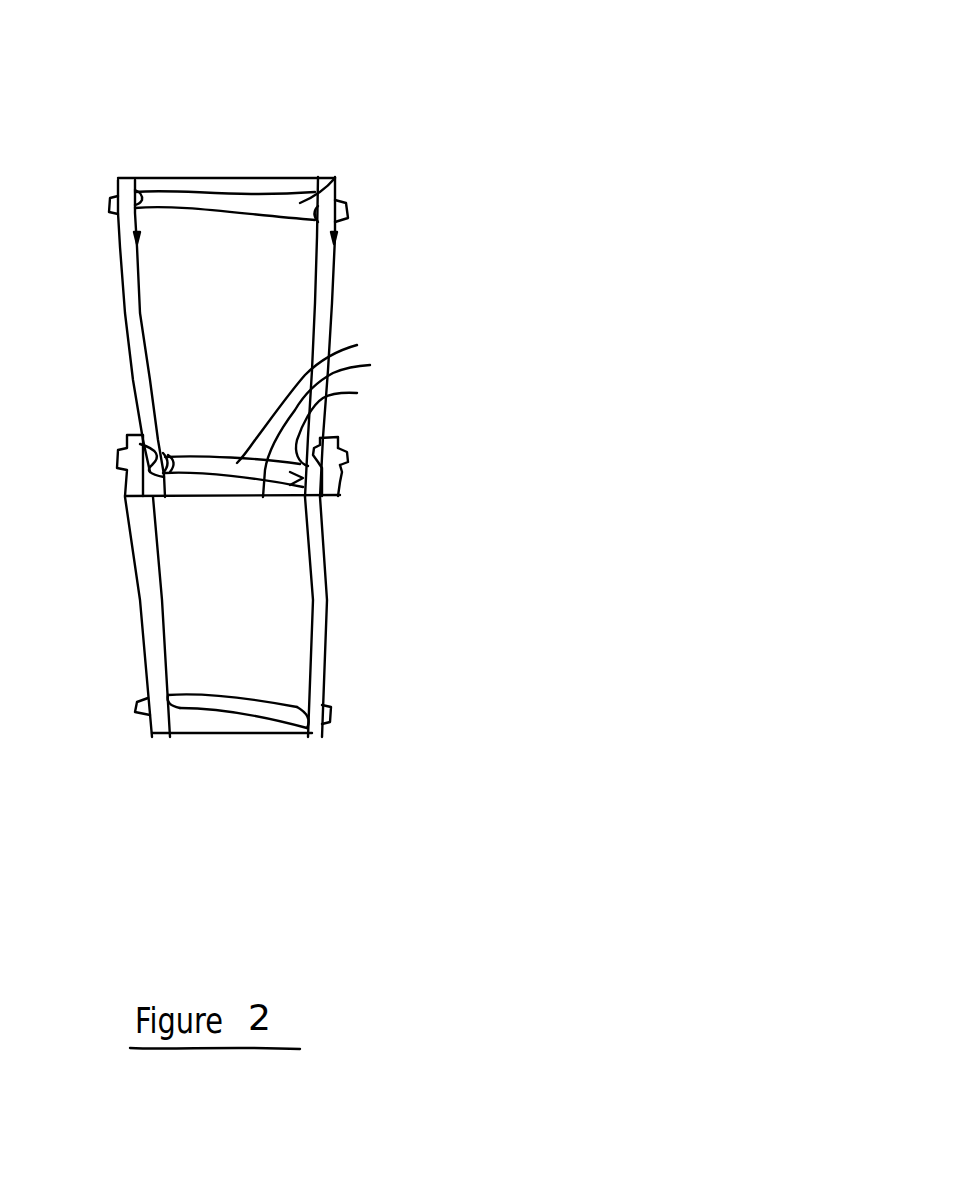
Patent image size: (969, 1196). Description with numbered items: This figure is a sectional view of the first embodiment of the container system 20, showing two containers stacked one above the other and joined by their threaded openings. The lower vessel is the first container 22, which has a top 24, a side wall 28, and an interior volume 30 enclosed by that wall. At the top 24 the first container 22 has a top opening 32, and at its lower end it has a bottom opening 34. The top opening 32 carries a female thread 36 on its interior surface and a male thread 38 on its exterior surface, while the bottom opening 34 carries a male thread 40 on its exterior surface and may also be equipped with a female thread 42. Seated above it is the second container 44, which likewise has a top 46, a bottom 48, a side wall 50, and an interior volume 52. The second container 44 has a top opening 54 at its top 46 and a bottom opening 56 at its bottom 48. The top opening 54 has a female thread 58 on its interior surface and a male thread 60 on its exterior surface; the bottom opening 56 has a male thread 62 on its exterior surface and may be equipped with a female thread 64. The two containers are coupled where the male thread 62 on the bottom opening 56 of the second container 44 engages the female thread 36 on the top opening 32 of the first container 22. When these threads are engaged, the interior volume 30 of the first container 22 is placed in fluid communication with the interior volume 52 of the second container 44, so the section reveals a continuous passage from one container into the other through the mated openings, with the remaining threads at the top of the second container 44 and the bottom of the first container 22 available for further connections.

The container system 20 is at (563, 68).
The first container 22 is at (327, 641).
The top 24 is at (340, 441).
The side wall 28 is at (323, 590).
The interior volume 30 is at (258, 582).
The top opening 32 is at (290, 503).
The bottom opening 34 is at (241, 733).
The female thread 36 is at (342, 473).
The male thread 38 is at (348, 458).
The male thread 40 is at (323, 713).
The female thread 42 is at (195, 705).
The second container 44 is at (337, 297).
The top 46 is at (338, 187).
The bottom 48 is at (357, 393).
The side wall 50 is at (323, 277).
The interior volume 52 is at (258, 345).
The top opening 54 is at (258, 178).
The bottom opening 56 is at (370, 365).
The female thread 58 is at (335, 178).
The male thread 60 is at (338, 217).
The male thread 62 is at (152, 473).
The female thread 64 is at (357, 345).